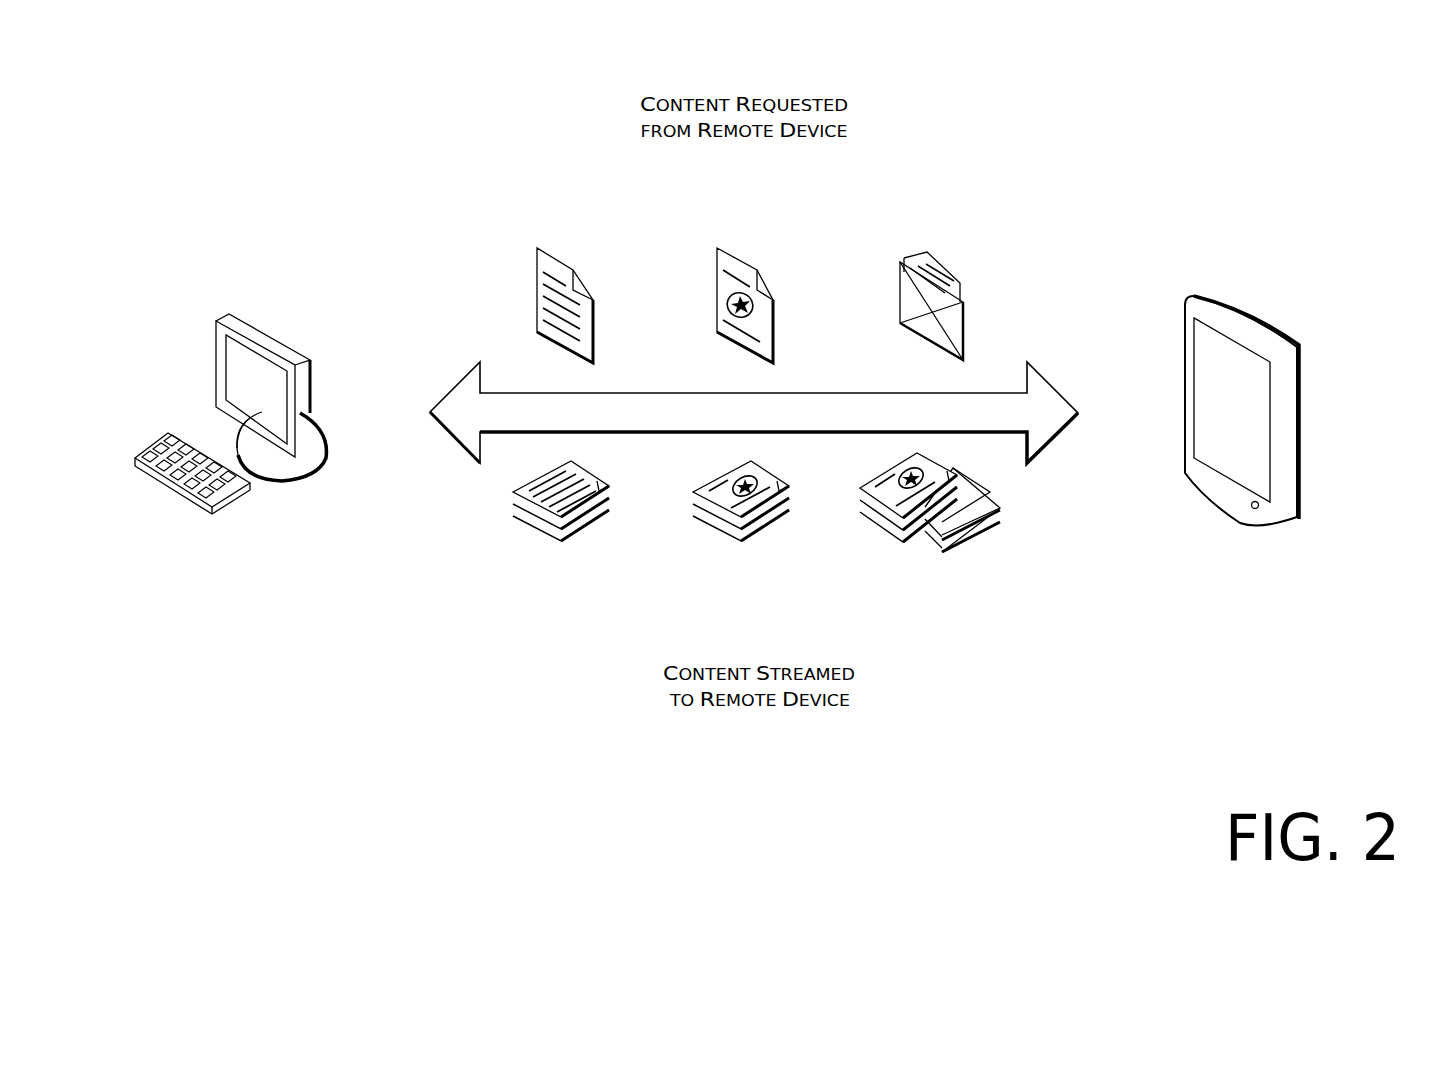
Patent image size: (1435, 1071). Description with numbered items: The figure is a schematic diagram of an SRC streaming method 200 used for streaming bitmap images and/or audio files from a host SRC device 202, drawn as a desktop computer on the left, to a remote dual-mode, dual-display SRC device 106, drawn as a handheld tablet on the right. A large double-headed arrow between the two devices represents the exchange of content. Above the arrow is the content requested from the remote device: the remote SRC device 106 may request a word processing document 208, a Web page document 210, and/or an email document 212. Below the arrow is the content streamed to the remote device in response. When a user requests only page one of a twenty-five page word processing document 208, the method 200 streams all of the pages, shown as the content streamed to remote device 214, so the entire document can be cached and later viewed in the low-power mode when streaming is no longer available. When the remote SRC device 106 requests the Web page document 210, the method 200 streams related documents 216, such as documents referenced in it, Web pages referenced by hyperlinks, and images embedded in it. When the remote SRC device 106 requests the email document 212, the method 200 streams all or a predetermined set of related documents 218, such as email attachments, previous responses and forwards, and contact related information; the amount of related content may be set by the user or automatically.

The SRC streaming method 200 is at (1222, 88).
The host SRC device 202 is at (252, 352).
The remote SRC device 106 is at (1212, 354).
The word processing document 208 is at (533, 244).
The Web page document 210 is at (713, 244).
The email document 212 is at (901, 250).
The content streamed to remote device 214 is at (537, 541).
The related documents 216 is at (719, 541).
The related documents 218 is at (906, 536).